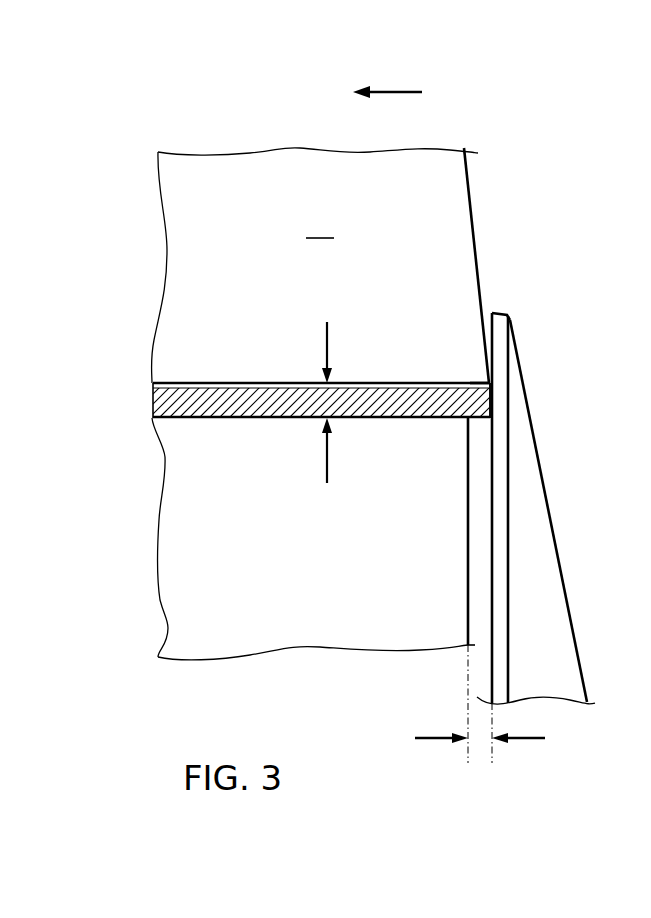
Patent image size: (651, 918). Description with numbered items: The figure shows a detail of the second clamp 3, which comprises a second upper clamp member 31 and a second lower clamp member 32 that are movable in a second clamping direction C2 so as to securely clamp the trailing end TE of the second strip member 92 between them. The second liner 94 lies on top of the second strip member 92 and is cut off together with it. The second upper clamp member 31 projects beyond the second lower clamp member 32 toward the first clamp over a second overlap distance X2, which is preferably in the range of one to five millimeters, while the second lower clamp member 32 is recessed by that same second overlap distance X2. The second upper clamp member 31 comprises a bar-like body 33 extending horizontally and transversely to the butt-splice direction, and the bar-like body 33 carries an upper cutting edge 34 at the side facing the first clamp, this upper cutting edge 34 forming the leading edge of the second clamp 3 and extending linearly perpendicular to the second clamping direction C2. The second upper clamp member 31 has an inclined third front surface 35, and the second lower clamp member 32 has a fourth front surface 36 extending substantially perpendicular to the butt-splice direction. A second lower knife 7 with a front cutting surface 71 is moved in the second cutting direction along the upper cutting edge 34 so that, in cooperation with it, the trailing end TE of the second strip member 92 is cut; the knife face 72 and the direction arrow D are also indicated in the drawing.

The second clamp 3 is at (221, 119).
The second upper clamp member 31 is at (278, 167).
The second lower clamp member 32 is at (290, 638).
The bar-like body 33 is at (361, 389).
The upper cutting edge 34 is at (486, 382).
The third front surface 35 is at (473, 204).
The fourth front surface 36 is at (468, 620).
The second lower knife 7 is at (553, 635).
The front cutting surface 71 is at (492, 553).
The tapered face of knife 72 is at (558, 558).
The second strip member 92 is at (236, 420).
The second liner 94 is at (210, 383).
The trailing end TE is at (490, 407).
The second clamping direction C2 is at (347, 396).
The second overlap distance X2 is at (480, 718).
The direction of travel D is at (387, 76).